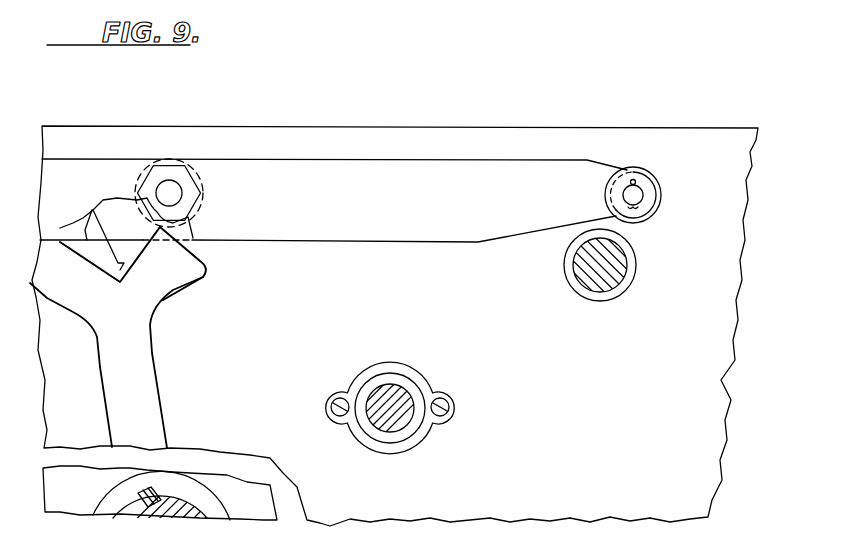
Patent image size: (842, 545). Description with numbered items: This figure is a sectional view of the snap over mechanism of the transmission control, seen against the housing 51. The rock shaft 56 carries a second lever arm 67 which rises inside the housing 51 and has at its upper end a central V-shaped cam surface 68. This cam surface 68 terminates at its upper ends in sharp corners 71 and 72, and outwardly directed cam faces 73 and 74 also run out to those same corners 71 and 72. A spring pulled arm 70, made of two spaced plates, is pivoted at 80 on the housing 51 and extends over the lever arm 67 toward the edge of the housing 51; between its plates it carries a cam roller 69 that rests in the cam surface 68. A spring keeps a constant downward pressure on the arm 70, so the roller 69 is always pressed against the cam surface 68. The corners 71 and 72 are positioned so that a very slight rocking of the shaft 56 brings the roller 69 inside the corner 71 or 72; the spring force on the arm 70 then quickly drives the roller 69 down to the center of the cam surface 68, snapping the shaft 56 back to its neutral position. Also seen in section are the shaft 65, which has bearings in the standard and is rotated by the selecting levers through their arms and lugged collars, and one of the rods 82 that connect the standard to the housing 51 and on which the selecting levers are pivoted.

The housing 51 is at (717, 338).
The rock shaft 56 is at (187, 517).
The shaft 65 is at (603, 292).
The lever arm 67 is at (158, 410).
The cam surface 68 is at (126, 230).
The cam roller 69 is at (140, 208).
The arm 70 is at (249, 168).
The corner 71 is at (70, 230).
The corner 72 is at (158, 222).
The cam face 73 is at (40, 263).
The cam face 74 is at (189, 259).
The pivot 80 is at (635, 195).
The rod 82 is at (400, 428).